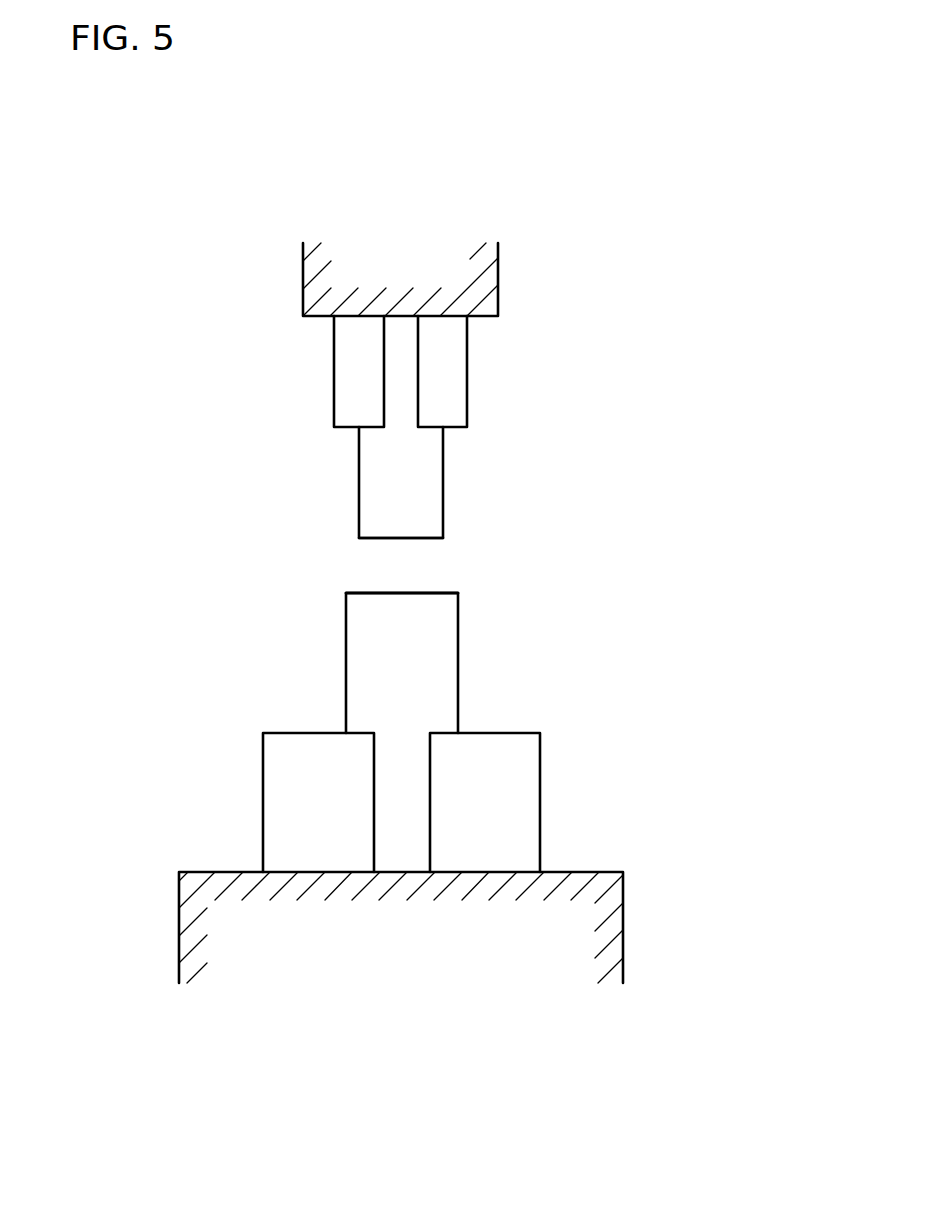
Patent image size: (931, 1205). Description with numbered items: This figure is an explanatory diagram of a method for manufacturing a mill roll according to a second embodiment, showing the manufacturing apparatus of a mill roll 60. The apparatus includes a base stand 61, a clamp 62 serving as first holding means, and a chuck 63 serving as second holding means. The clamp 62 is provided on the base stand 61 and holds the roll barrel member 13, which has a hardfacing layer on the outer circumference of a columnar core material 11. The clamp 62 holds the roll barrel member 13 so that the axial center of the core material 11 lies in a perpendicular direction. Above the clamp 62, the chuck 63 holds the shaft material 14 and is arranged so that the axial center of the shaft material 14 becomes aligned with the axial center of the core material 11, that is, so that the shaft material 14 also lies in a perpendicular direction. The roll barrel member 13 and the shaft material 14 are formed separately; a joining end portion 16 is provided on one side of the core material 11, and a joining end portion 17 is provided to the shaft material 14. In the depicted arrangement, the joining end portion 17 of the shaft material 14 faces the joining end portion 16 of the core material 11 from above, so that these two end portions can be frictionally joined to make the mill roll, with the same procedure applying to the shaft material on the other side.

The manufacturing apparatus of a mill roll 60 is at (628, 288).
The chuck 63 is at (478, 377).
The shaft material 14 is at (432, 473).
The joining end portion 17 is at (418, 539).
The core material 11 is at (388, 586).
The joining end portion 16 is at (430, 592).
The roll barrel member 13 is at (462, 658).
The clamp 62 is at (547, 770).
The base stand 61 is at (580, 928).